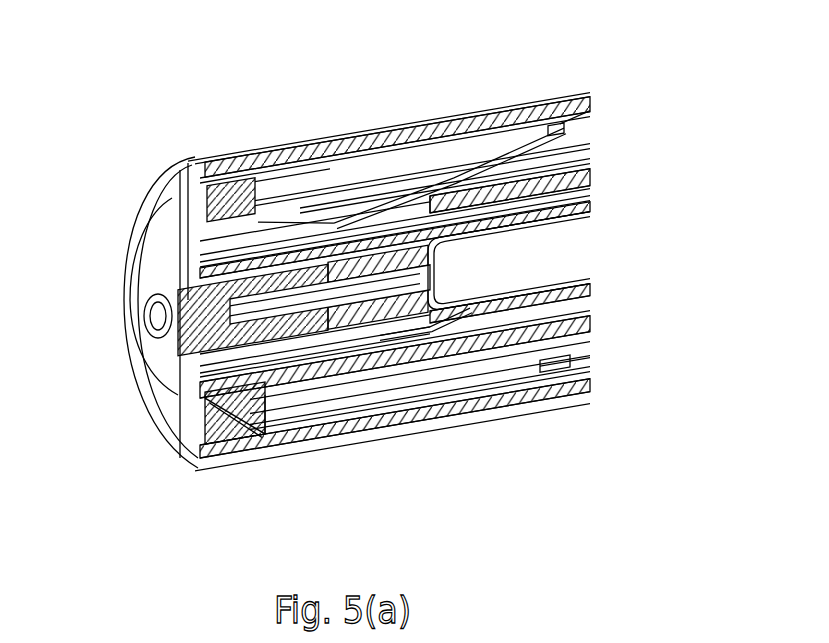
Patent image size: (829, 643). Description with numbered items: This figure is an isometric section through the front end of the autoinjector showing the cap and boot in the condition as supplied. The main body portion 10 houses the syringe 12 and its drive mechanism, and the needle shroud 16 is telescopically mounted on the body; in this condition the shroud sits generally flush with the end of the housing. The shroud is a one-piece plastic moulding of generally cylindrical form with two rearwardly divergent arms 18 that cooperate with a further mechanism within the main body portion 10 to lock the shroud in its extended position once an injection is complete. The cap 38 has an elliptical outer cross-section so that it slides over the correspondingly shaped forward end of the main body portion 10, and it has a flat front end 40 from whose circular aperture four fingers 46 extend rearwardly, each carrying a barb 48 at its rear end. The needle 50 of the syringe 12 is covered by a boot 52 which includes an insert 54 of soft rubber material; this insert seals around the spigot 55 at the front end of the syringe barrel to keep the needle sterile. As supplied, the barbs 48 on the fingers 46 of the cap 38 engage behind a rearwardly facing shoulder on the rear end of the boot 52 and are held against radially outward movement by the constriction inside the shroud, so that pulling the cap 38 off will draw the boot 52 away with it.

The main body portion 10 is at (485, 110).
The syringe 12 is at (527, 276).
The needle shroud 16 is at (265, 205).
The rearwardly divergent arms 18 is at (590, 103).
The cap 38 is at (141, 436).
The flat front end 40 is at (150, 365).
The fingers 46 is at (333, 228).
The barbs 48 is at (447, 175).
The needle 50 is at (272, 395).
The boot 52 is at (150, 310).
The insert 54 is at (150, 290).
The spigot 55 is at (432, 263).